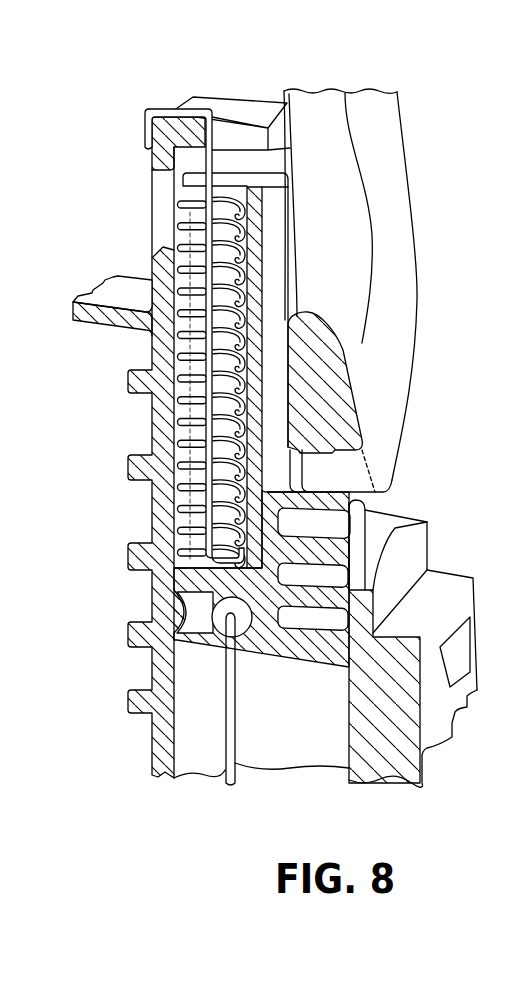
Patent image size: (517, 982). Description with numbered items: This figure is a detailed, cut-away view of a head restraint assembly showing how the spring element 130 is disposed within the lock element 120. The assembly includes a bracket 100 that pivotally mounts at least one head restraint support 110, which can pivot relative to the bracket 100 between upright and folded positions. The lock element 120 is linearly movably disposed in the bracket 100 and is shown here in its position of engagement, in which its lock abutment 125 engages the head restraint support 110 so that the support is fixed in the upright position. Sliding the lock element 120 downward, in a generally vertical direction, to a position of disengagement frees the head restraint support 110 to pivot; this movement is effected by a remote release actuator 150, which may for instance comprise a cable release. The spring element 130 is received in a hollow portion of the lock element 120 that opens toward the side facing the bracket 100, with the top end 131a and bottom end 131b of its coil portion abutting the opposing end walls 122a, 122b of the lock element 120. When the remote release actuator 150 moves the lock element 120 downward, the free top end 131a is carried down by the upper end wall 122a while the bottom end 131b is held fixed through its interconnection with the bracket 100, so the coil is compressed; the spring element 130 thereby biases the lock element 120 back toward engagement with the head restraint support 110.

The bracket 100 is at (132, 108).
The head restraint support 110 is at (385, 180).
The lock element 120 is at (258, 423).
The end wall 122a is at (230, 176).
The end wall 122b is at (187, 578).
The lock abutment 125 is at (362, 503).
The spring element 130 is at (174, 279).
The top end 131a is at (173, 210).
The bottom end 131b is at (187, 560).
The remote release actuator 150 is at (206, 642).